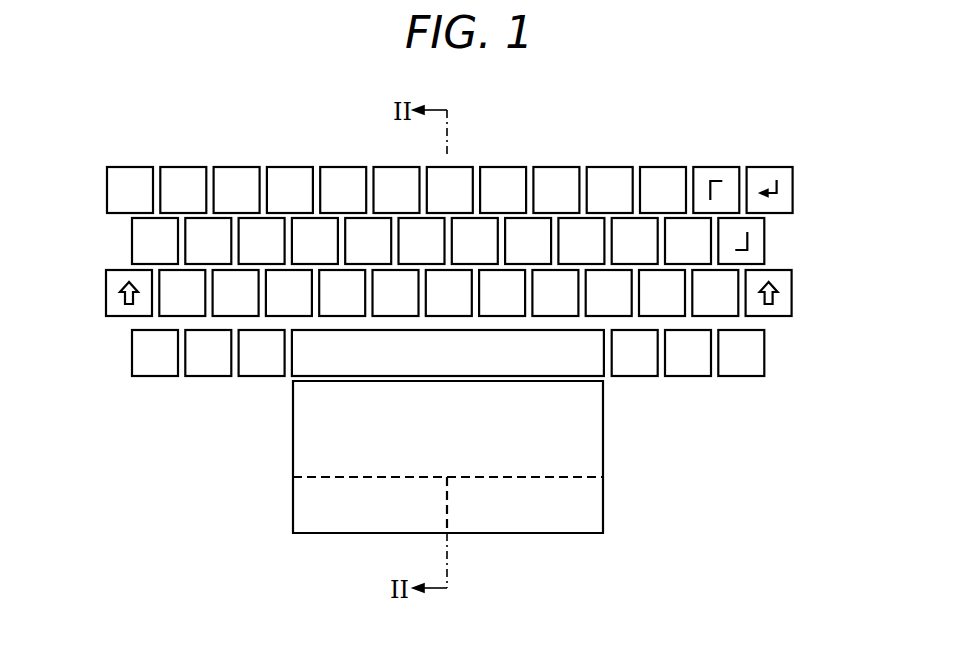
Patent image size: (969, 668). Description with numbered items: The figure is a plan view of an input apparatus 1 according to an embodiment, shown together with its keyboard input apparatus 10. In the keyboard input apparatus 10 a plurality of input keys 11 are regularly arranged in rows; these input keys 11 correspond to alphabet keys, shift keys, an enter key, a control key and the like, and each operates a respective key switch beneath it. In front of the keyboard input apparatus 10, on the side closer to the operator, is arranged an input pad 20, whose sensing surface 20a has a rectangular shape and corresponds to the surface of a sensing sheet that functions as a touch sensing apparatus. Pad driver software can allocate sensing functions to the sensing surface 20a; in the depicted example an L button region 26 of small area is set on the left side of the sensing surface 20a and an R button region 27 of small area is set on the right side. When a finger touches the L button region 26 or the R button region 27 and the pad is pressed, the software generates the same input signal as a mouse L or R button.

The input apparatus 1 is at (657, 139).
The keyboard input apparatus 10 is at (805, 167).
The input keys 11 is at (607, 167).
The input pad 20 is at (278, 514).
The sensing surface 20a is at (583, 452).
The L button region 26 is at (351, 513).
The R button region 27 is at (549, 513).